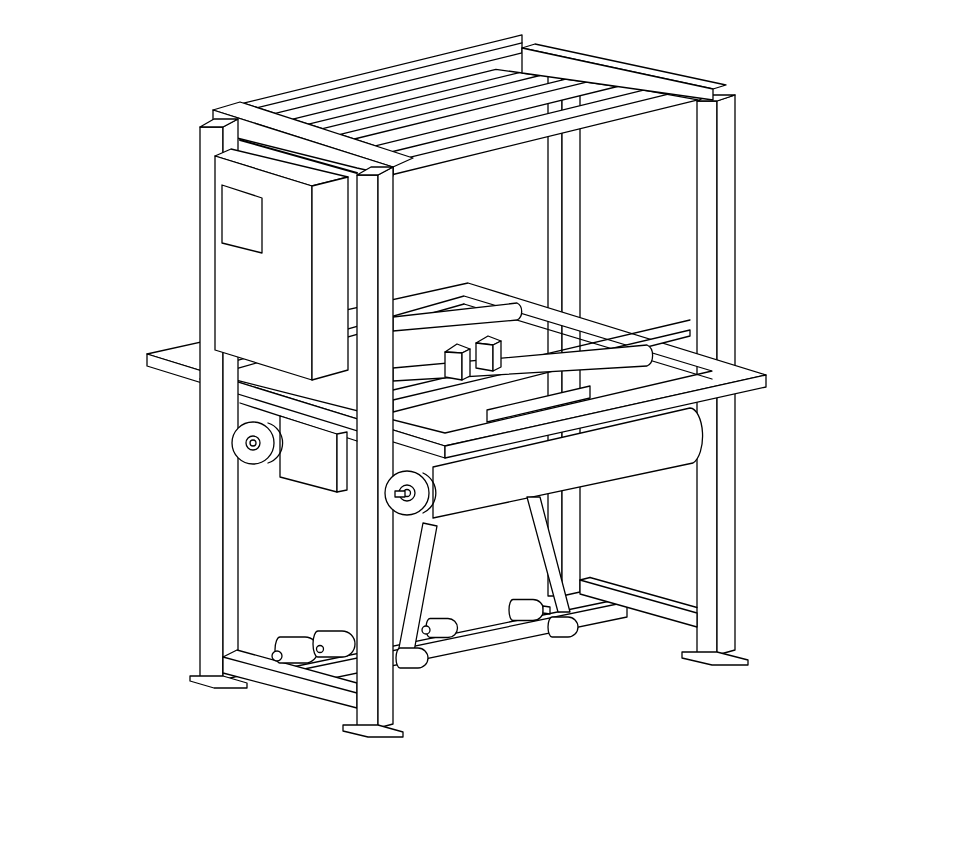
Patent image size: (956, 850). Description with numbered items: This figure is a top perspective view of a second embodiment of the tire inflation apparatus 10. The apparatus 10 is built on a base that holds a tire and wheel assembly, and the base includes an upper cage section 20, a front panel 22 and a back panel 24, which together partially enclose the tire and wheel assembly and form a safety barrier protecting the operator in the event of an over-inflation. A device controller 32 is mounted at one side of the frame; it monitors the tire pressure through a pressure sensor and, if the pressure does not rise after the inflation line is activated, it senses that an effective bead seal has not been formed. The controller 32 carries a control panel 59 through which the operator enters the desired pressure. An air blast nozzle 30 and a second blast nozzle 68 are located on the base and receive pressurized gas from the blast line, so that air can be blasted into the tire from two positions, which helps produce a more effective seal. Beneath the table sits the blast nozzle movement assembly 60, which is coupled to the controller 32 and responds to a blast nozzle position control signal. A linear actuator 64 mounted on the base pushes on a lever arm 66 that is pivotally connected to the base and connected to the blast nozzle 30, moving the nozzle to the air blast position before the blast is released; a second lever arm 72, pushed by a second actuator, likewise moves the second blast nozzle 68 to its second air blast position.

The apparatus for inflating a tire 10 is at (155, 79).
The upper cage section 20 is at (498, 50).
The front panel 22 is at (247, 130).
The back panel 24 is at (653, 88).
The air blast nozzle 30 is at (490, 342).
The device controller 32 is at (228, 262).
The control panel 59 is at (230, 200).
The blast nozzle movement assembly 60 is at (505, 674).
The linear actuator 64 is at (529, 613).
The lever arm 66 is at (545, 542).
The second blast nozzle 68 is at (440, 352).
The second lever arm 72 is at (432, 553).